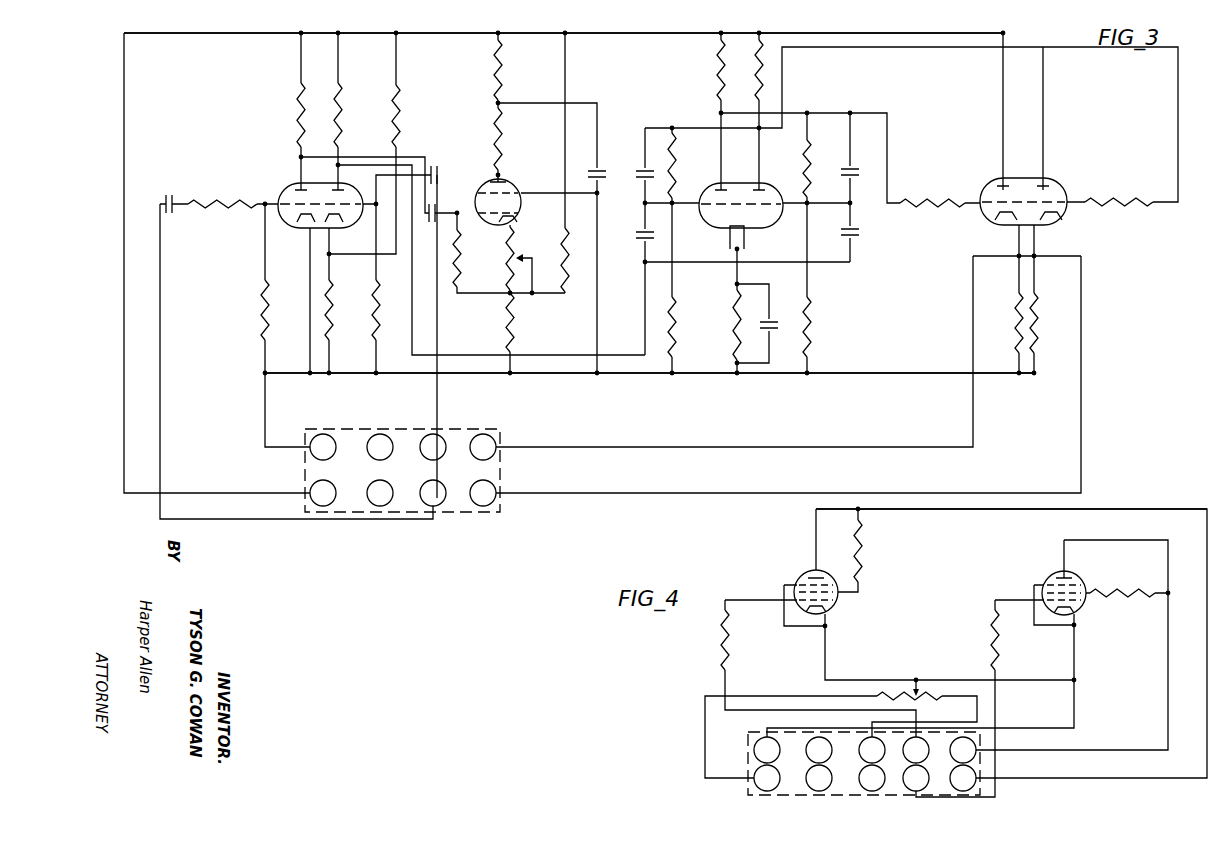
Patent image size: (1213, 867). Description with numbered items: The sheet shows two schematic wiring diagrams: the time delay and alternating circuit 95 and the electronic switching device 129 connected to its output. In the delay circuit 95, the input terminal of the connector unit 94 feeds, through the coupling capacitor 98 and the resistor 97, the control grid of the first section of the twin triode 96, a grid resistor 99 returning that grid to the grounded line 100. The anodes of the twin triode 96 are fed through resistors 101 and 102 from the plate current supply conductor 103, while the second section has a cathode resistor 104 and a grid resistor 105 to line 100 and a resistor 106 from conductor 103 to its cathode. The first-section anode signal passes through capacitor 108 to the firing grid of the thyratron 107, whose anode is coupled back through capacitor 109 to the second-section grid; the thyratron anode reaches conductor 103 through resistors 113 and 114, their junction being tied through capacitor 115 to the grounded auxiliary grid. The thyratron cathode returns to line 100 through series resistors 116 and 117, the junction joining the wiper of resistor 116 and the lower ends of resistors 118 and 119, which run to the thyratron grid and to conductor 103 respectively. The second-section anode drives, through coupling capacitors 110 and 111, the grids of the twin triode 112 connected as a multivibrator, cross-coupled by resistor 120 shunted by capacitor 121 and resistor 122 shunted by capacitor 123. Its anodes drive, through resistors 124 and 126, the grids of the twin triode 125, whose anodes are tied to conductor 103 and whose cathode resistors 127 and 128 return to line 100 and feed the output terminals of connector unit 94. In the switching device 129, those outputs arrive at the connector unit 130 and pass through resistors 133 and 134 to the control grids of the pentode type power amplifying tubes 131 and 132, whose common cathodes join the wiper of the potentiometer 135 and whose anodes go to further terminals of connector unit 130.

In FIG. 3, the connector unit 94 is at (450, 429).
In FIG. 3, the time delay and alternating circuit 95 is at (262, 68).
In FIG. 3, the twin triode 96 is at (280, 190).
In FIG. 3, the resistor 97 is at (227, 198).
In FIG. 3, the coupling capacitor 98 is at (172, 198).
In FIG. 3, the grid resistor 99 is at (259, 308).
In FIG. 3, the grounded line 100 is at (409, 376).
In FIG. 3, the resistor 101 is at (296, 118).
In FIG. 3, the resistor 102 is at (343, 106).
In FIG. 3, the plate current supply conductor 103 is at (350, 39).
In FIG. 3, the cathode resistor 104 is at (333, 310).
In FIG. 3, the grid resistor 105 is at (380, 310).
In FIG. 3, the resistor 106 is at (402, 97).
In FIG. 3, the thyratron 107 is at (521, 195).
In FIG. 3, the capacitor 108 is at (436, 222).
In FIG. 3, the capacitor 109 is at (439, 169).
In FIG. 3, the coupling capacitor 110 is at (636, 232).
In FIG. 3, the coupling capacitor 111 is at (860, 232).
In FIG. 3, the twin triode 112 is at (750, 228).
In FIG. 3, the resistor 113 is at (503, 135).
In FIG. 3, the resistor 114 is at (503, 65).
In FIG. 3, the capacitor 115 is at (606, 170).
In FIG. 3, the resistor 116 is at (505, 271).
In FIG. 3, the resistor 117 is at (506, 322).
In FIG. 3, the resistor 118 is at (462, 260).
In FIG. 3, the resistor 119 is at (569, 258).
In FIG. 3, the resistor 120 is at (677, 164).
In FIG. 3, the capacitor 121 is at (640, 180).
In FIG. 3, the resistor 122 is at (810, 150).
In FIG. 3, the capacitor 123 is at (857, 168).
In FIG. 3, the resistor 124 is at (922, 200).
In FIG. 3, the twin triode 125 is at (1055, 183).
In FIG. 3, the resistor 126 is at (1125, 208).
In FIG. 3, the cathode resistor 127 is at (1014, 331).
In FIG. 3, the cathode resistor 128 is at (1038, 331).
In FIG. 4, the electronic switching device 129 is at (1132, 501).
In FIG. 4, the connector unit 130 is at (745, 785).
In FIG. 4, the pentode type power amplifying tube 131 is at (795, 578).
In FIG. 4, the pentode type power amplifying tube 132 is at (1044, 576).
In FIG. 4, the resistor 133 is at (732, 650).
In FIG. 4, the resistor 134 is at (988, 645).
In FIG. 4, the potentiometer 135 is at (936, 700).